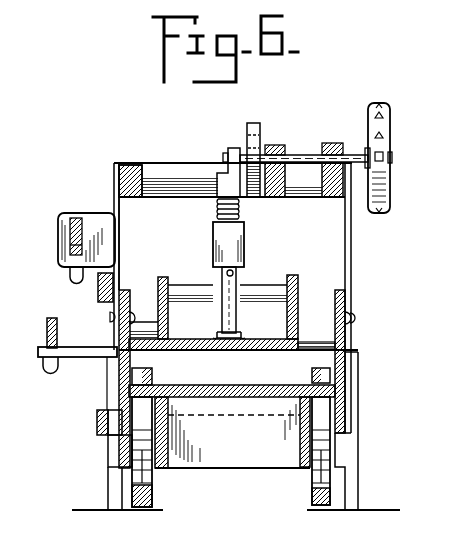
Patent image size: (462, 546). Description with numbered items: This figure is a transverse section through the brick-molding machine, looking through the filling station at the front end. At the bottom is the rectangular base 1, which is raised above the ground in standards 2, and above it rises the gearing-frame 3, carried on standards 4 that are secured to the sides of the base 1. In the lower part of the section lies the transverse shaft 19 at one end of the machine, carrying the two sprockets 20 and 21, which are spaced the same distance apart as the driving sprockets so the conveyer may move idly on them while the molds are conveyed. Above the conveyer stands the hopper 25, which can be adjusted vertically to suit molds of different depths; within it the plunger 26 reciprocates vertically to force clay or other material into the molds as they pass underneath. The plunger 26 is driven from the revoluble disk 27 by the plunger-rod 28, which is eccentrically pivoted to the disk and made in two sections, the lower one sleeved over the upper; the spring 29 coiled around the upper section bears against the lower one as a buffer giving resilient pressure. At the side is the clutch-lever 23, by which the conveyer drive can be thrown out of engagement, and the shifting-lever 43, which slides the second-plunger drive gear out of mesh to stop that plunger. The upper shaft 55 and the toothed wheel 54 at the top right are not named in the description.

The base 1 is at (125, 387).
The standards 2 is at (113, 483).
The gearing-frame 3 is at (133, 163).
The standards 4 is at (121, 240).
The shaft 19 is at (330, 421).
The sprocket 20 is at (122, 458).
The sprocket 21 is at (330, 449).
The clutch-lever 23 is at (46, 330).
The hopper 25 is at (347, 302).
The plunger 26 is at (242, 276).
The revoluble disk 27 is at (247, 125).
The plunger-rod 28 is at (225, 155).
The spring 29 is at (240, 205).
The shifting-lever 43 is at (70, 245).
The gear 54 is at (390, 132).
The shaft 55 is at (302, 155).